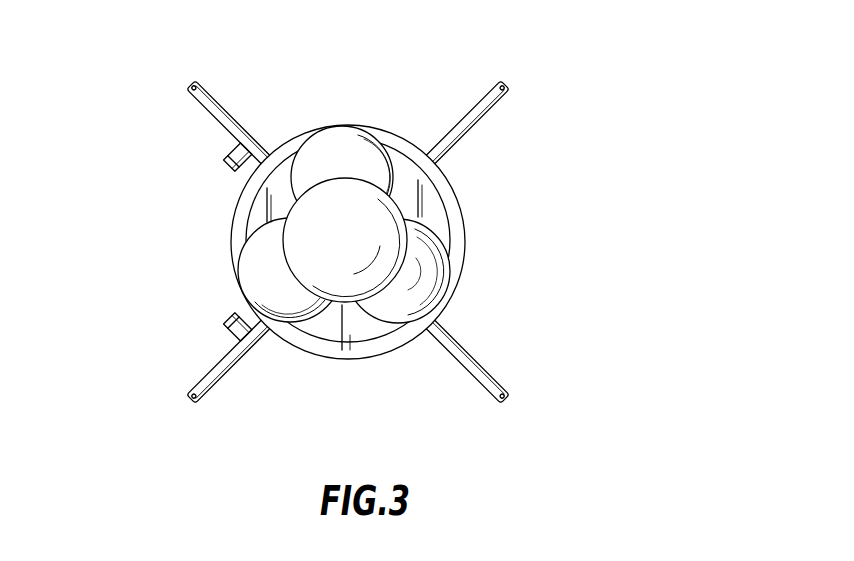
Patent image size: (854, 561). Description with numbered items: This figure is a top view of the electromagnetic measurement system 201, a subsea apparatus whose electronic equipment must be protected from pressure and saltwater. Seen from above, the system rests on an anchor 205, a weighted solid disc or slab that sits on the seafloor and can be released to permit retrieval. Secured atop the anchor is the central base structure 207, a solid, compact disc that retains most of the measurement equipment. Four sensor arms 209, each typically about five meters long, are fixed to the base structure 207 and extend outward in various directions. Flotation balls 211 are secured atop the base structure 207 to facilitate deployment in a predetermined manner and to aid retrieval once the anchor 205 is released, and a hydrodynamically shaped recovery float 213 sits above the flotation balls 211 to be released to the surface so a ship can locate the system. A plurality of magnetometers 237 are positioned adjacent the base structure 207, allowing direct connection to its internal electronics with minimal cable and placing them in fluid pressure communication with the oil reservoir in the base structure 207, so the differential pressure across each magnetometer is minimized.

The electromagnetic measurement system 201 is at (645, 89).
The anchor 205 is at (462, 220).
The base structure 207 is at (417, 147).
The sensor arms 209 is at (495, 377).
The flotation balls 211 is at (343, 145).
The recovery float 213 is at (368, 220).
The magnetometers 237 is at (223, 165).